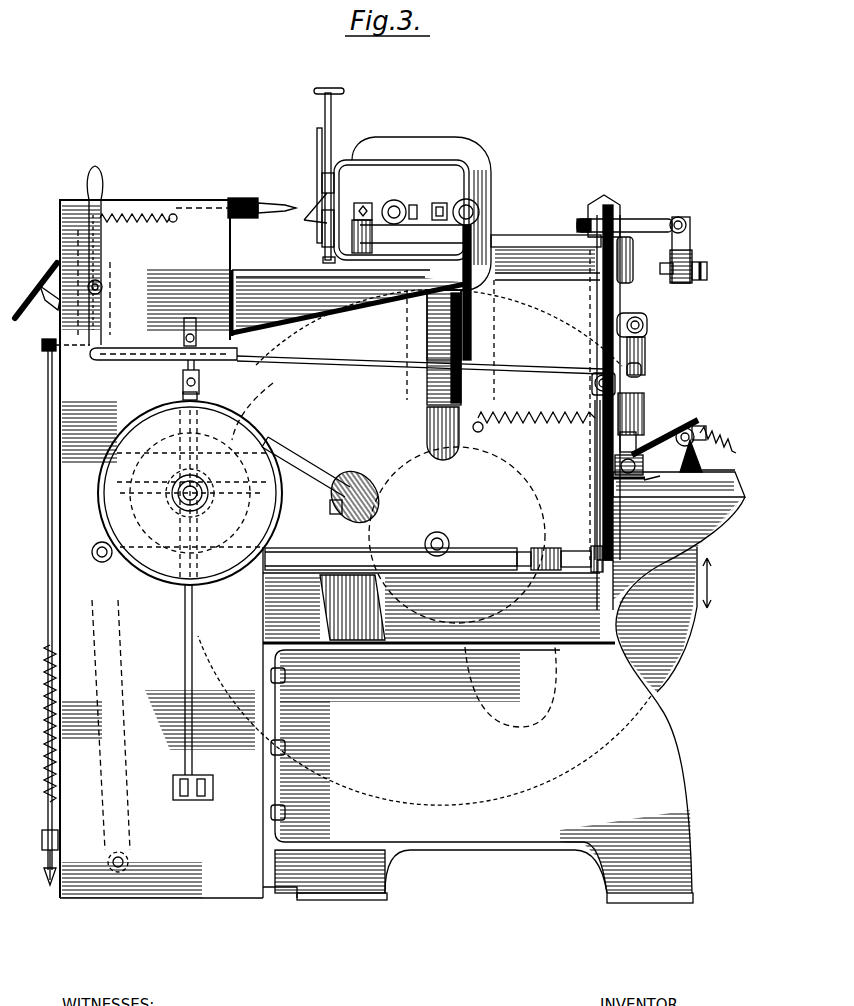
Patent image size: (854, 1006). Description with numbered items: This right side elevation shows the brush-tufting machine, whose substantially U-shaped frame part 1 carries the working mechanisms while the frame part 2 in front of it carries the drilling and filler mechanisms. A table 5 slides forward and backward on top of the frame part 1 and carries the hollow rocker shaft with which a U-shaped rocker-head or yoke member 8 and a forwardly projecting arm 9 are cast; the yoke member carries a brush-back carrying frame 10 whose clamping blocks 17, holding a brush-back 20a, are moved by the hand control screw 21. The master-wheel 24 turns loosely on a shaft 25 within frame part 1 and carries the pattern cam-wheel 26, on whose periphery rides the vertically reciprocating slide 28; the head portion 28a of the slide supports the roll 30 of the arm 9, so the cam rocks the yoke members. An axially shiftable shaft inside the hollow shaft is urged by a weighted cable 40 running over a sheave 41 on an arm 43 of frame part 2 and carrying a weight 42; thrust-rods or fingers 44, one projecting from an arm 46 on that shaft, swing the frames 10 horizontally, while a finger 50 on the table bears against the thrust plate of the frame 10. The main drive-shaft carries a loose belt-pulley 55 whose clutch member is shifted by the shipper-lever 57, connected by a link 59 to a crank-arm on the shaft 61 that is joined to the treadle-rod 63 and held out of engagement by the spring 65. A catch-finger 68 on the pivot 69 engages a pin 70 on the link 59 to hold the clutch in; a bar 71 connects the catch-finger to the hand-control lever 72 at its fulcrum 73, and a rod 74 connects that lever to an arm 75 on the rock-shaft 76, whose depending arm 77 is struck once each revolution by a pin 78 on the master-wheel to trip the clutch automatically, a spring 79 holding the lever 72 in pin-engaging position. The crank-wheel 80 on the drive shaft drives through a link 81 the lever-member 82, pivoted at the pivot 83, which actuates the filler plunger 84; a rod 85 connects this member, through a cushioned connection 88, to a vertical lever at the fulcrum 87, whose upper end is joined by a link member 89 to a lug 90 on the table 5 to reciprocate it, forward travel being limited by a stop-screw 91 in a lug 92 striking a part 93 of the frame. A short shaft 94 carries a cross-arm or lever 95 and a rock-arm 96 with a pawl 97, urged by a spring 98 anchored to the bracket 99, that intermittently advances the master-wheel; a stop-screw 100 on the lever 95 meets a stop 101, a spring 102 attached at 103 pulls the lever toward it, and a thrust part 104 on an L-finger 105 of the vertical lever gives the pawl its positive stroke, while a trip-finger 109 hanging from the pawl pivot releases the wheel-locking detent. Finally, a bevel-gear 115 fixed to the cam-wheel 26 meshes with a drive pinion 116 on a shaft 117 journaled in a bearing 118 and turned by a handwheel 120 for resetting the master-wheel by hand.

The frame part 1 is at (504, 700).
The frame part 2 is at (161, 549).
The table 5 is at (280, 203).
The rocker-head or yoke member 8 is at (487, 162).
The arm 9 is at (442, 202).
The brush-back carrying frame 10 is at (378, 166).
The brush-back clamping blocks 17 is at (302, 219).
The slide bracket 20a is at (322, 172).
The hand control screw 21 is at (332, 122).
The master-wheel 24 is at (665, 671).
The shaft 25 is at (450, 532).
The pattern cam-wheel 26 is at (388, 503).
The slide 28 is at (443, 421).
The head portion 28a is at (413, 204).
The roll 30 is at (392, 200).
The weighted cable 40 is at (461, 311).
The sheave 41 is at (492, 223).
The weight 42 is at (462, 338).
The arm 43 is at (351, 303).
The thrust-rod or finger 44 is at (352, 235).
The arm 46 is at (480, 206).
The finger 50 is at (362, 203).
The belt-pulley 55 is at (272, 525).
The shipper-lever 57 is at (184, 628).
The link 59 is at (181, 455).
The shaft 61 is at (41, 346).
The treadle-rod 63 is at (47, 521).
The spring 65 is at (43, 723).
The catch-finger 68 is at (200, 390).
The pivot 69 is at (191, 328).
The pin or lug 70 is at (181, 393).
The bar 71 is at (128, 362).
The hand-control lever 72 is at (102, 258).
The fulcrum 73 is at (103, 288).
The rod 74 is at (312, 368).
The arm 75 is at (645, 352).
The rock-shaft 76 is at (644, 325).
The arm 77 is at (642, 372).
The pin 78 is at (262, 720).
The spring 79 is at (150, 224).
The crank-wheel 80 is at (619, 441).
The link 81 is at (134, 484).
The lever-member 82 is at (119, 660).
The pivot 83 is at (130, 861).
The plunger 84 is at (200, 206).
The rod 85 is at (392, 546).
The fulcrum 87 is at (595, 384).
The cushioned connection 88 is at (548, 572).
The link member 89 is at (633, 218).
The lug 90 is at (690, 226).
The stop-screw 91 is at (699, 282).
The lug 92 is at (690, 265).
The registering part 93 is at (632, 278).
The short shaft 94 is at (672, 430).
The cross-arm or lever 95 is at (615, 470).
The rock-arm 96 is at (690, 430).
The pawl 97 is at (719, 446).
The spring 98 is at (708, 432).
The bracket or frame part 99 is at (679, 486).
The stop-screw 100 is at (644, 412).
The stop 101 is at (596, 412).
The spring 102 is at (545, 424).
The spring attachment 103 is at (479, 433).
The screw or thrust part 104 is at (646, 483).
The L-finger 105 is at (610, 500).
The trip-finger 109 is at (730, 467).
The bevel-gear 115 is at (378, 593).
The drive pinion 116 is at (378, 494).
The shaft 117 is at (310, 476).
The bearing 118 is at (328, 512).
The handwheel 120 is at (45, 276).